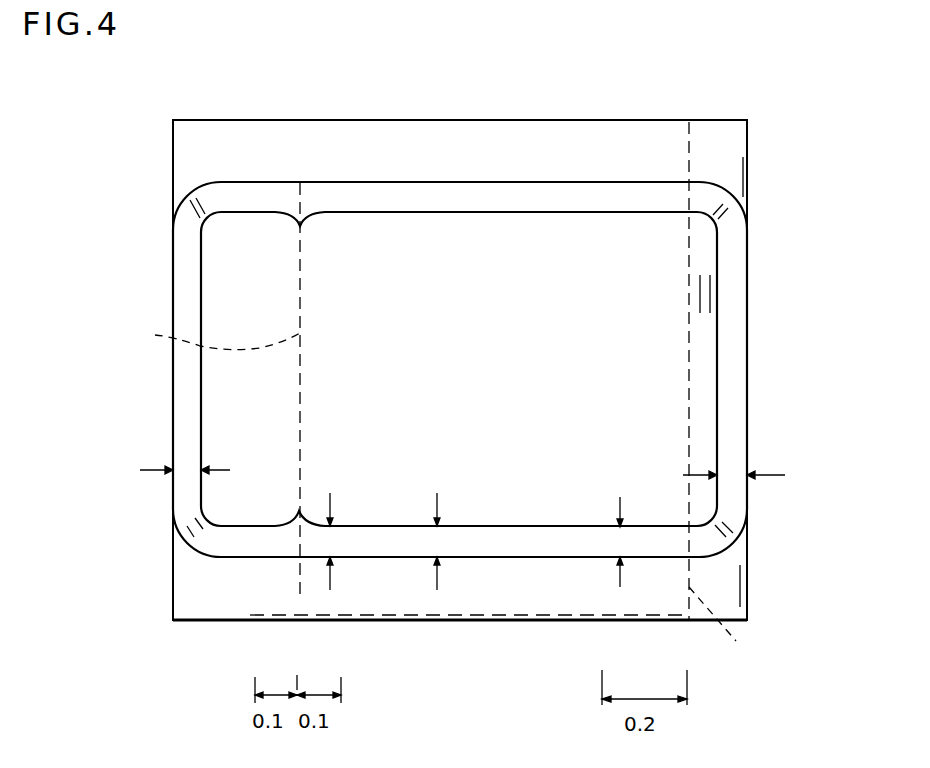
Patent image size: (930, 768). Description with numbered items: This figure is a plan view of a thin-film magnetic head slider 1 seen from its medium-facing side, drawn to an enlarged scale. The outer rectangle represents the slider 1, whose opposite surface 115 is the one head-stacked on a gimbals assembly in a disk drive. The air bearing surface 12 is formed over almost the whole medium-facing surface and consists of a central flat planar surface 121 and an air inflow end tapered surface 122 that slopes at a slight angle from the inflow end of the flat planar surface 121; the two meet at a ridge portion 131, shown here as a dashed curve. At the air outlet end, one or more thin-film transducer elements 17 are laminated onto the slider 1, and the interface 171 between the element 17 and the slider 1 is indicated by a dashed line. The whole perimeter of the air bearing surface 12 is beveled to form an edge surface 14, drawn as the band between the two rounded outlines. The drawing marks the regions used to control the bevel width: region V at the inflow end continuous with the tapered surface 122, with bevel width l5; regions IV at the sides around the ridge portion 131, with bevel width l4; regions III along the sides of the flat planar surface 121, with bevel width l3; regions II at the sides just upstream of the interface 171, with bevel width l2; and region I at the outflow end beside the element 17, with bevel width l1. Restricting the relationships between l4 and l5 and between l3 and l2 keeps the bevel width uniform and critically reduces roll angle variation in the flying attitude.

The slider 1 is at (496, 138).
The air bearing surface 12 is at (415, 258).
The edge surface 14 is at (183, 510).
The thin-film transducer element 17 is at (700, 373).
The surface 115 is at (202, 120).
The central flat planar surface 121 is at (597, 250).
The air inflow end tapered surface 122 is at (212, 288).
The ridge portion 131 is at (202, 351).
The interface 171 is at (508, 628).
The bevel width at the air outflow end l1 is at (746, 478).
The bevel width in regions II l2 is at (632, 542).
The bevel width in regions III l3 is at (449, 541).
The bevel width in regions IV l4 is at (342, 541).
The bevel width in region V l5 is at (170, 475).
The region I is at (735, 440).
The regions II is at (673, 198).
The regions III is at (535, 198).
The regions IV is at (291, 197).
The region V is at (173, 437).